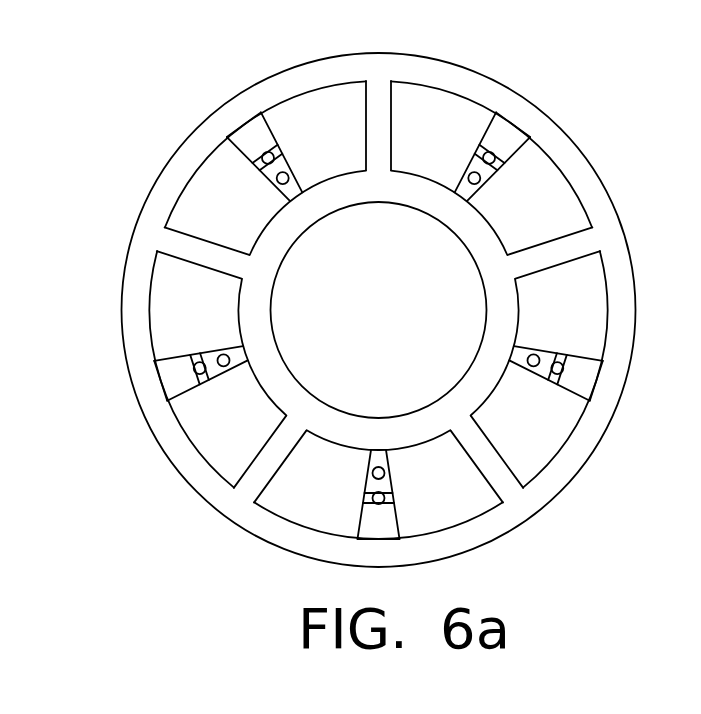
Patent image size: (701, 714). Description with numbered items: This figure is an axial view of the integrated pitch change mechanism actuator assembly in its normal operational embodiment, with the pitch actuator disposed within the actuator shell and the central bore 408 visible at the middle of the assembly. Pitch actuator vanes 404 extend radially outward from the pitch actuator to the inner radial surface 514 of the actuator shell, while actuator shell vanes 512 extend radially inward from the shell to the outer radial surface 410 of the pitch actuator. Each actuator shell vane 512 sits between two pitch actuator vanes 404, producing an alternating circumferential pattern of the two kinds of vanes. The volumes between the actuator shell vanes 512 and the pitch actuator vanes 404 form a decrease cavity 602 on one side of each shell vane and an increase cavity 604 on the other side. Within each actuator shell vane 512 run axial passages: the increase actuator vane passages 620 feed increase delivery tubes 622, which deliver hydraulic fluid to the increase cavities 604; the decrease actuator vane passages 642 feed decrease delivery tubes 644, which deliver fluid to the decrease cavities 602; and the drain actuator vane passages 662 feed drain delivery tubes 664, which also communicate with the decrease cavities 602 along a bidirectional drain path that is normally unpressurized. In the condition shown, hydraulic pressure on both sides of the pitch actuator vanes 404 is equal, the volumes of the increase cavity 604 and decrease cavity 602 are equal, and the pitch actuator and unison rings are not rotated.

The pitch actuator vanes 404 is at (381, 63).
The central bore 408 is at (358, 302).
The outer radial surface 410 is at (262, 232).
The actuator shell vanes 512 is at (470, 212).
The inner radial surface 514 is at (582, 184).
The decrease cavity 602 is at (333, 92).
The increase cavity 604 is at (407, 95).
The increase actuator vane passages 620 is at (262, 114).
The increase delivery tubes 622 is at (227, 137).
The decrease actuator vane passages 642 is at (278, 183).
The decrease delivery tubes 644 is at (289, 176).
The drain actuator vane passages 662 is at (263, 160).
The drain delivery tubes 664 is at (274, 156).